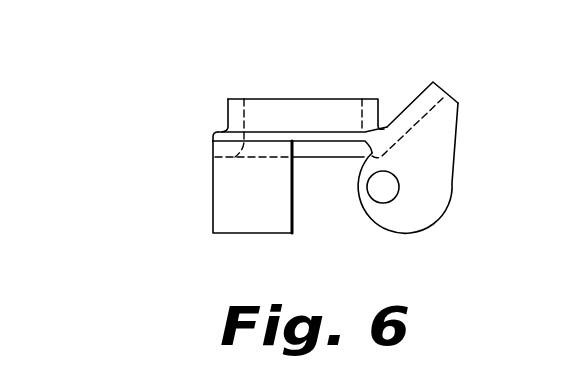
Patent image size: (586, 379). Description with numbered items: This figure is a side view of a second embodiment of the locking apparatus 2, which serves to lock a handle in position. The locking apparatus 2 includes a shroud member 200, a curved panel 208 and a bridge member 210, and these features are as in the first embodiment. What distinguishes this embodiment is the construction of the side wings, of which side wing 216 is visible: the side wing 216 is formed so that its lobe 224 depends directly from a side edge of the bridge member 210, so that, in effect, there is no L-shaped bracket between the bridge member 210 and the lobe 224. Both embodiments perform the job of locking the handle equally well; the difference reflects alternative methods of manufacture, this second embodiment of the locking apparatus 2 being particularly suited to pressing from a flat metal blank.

The locking apparatus 2 is at (113, 224).
The shroud member 200 is at (261, 88).
The curved panel 208 is at (243, 212).
The bridge member 210 is at (415, 108).
The side wing 216 is at (428, 161).
The lobe 224 is at (393, 214).